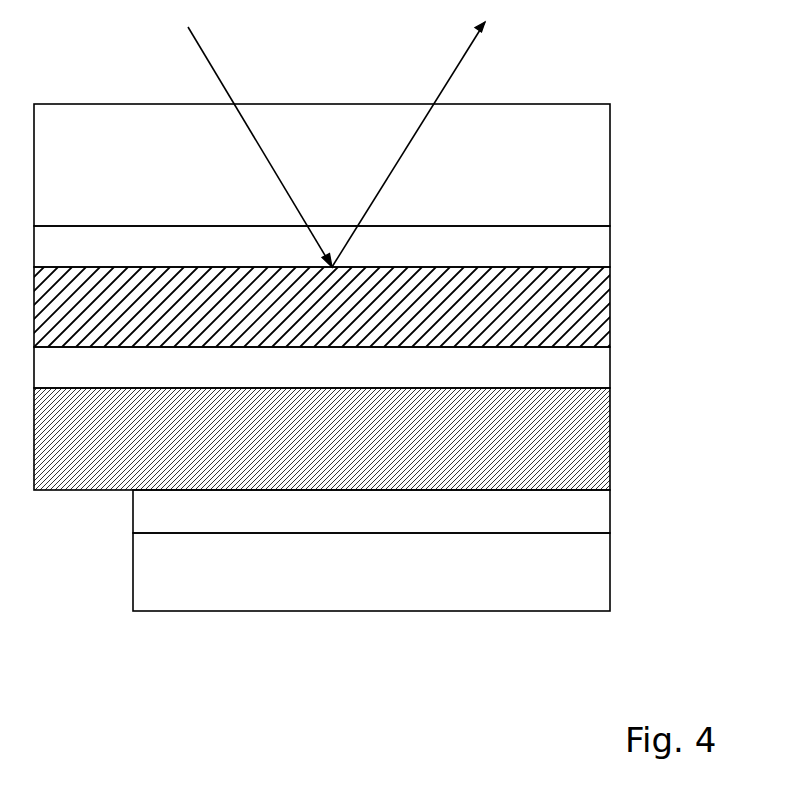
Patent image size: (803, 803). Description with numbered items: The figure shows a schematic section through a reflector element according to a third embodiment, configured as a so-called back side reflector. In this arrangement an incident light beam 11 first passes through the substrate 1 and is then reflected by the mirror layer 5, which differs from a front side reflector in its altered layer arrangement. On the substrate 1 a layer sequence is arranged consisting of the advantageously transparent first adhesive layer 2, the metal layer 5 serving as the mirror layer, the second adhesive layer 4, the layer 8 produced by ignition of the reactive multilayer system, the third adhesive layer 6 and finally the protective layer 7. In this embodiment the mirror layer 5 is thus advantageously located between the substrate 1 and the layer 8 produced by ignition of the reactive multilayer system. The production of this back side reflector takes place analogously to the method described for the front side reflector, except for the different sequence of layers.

The substrate 1 is at (592, 166).
The first adhesive layer 2 is at (588, 250).
The mirror layer 5 is at (593, 300).
The second adhesive layer 4 is at (583, 367).
The layer produced by ignition of the reactive multilayer system 8 is at (588, 445).
The third adhesive layer 6 is at (587, 515).
The protective layer 7 is at (587, 578).
The incident light beam 11 is at (220, 72).